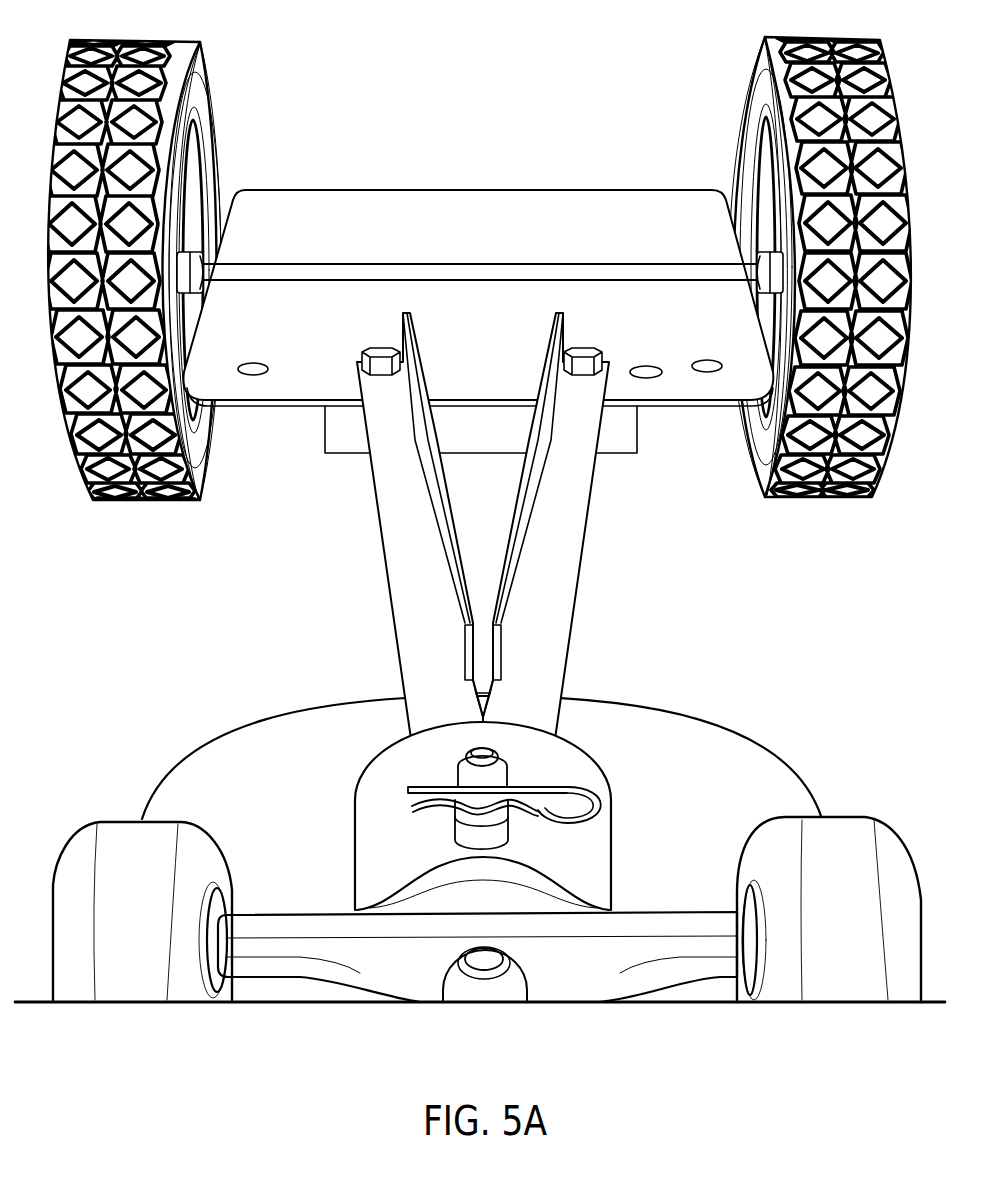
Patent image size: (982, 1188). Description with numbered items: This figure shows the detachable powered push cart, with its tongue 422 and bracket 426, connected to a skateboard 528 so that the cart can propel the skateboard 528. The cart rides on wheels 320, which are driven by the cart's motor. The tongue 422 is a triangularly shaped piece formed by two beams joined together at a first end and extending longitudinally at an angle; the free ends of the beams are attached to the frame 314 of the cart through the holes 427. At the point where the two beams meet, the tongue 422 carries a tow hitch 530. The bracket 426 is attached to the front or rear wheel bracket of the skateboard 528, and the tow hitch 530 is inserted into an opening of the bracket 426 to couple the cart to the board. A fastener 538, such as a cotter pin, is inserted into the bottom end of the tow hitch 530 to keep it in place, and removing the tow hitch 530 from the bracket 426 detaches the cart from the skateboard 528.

The wheel 320 is at (144, 512).
The frame 314 is at (681, 420).
The holes 427 is at (360, 345).
The tongue 422 is at (609, 555).
The skateboard 528 is at (791, 764).
The bracket 426 is at (376, 836).
The tow hitch 530 is at (455, 765).
The fastener 538 is at (586, 784).